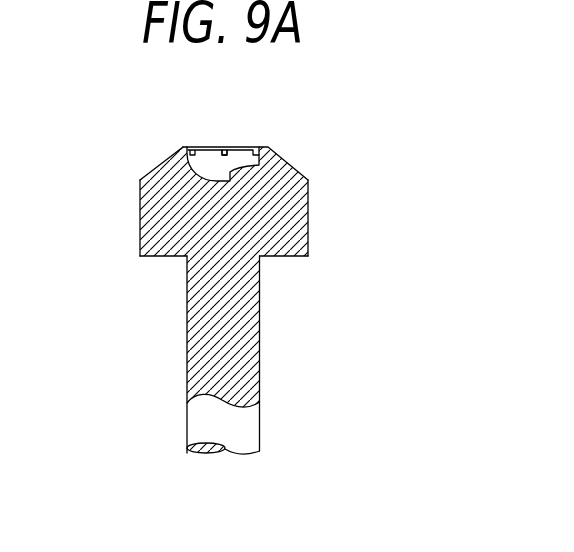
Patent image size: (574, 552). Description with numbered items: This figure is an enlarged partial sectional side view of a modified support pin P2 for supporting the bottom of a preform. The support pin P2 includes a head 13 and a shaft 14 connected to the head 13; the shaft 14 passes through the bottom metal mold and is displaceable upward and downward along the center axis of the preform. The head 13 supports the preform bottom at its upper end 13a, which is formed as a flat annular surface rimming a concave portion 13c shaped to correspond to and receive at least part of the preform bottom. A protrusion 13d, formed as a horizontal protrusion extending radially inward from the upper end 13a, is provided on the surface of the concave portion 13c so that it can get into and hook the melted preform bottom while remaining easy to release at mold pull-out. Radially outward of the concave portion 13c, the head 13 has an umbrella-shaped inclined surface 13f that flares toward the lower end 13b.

The head 13 is at (175, 216).
The upper end 13a is at (186, 147).
The lower end 13b is at (167, 258).
The concave portion 13c is at (259, 165).
The protrusion 13d is at (197, 141).
The inclined surface 13f is at (160, 164).
The shaft 14 is at (255, 353).
The support pin P2 is at (328, 220).